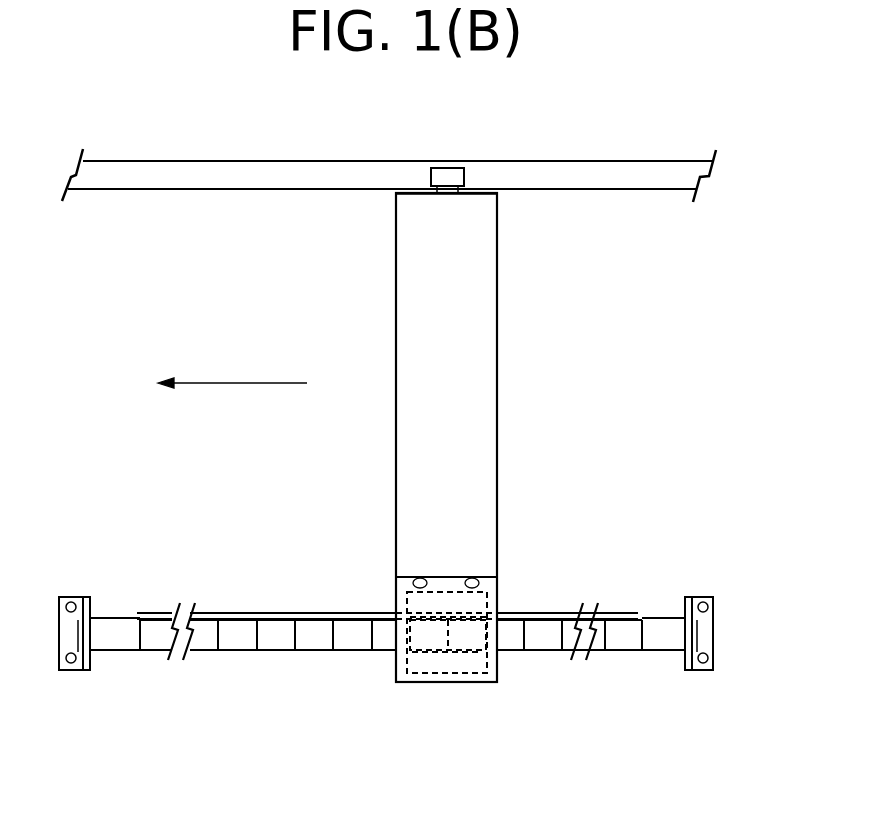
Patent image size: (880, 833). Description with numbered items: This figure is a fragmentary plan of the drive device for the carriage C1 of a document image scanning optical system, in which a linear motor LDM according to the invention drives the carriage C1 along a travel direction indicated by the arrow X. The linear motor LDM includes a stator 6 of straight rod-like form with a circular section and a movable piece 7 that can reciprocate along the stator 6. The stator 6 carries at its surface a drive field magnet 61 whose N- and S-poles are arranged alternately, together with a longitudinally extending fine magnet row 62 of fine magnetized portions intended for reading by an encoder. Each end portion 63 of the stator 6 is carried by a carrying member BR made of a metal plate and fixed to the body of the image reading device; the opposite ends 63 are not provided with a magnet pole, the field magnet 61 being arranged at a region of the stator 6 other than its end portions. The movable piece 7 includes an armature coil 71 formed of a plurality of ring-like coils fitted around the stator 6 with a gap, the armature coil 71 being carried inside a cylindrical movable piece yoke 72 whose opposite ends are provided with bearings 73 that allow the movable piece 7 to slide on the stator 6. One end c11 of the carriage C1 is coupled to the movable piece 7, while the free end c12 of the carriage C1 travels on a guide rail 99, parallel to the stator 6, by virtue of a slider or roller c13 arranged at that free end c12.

The guide rail 99 is at (270, 160).
The slider or roller c13 is at (452, 176).
The free end of the carriage c12 is at (430, 208).
The carriage C1 is at (462, 450).
The one end of the carriage c11 is at (455, 577).
The linear motor LDM is at (566, 577).
The moving direction X is at (228, 382).
The stator 6 is at (392, 590).
The drive field magnet 61 is at (212, 622).
The fine magnet row 62 is at (296, 612).
The end portion of the stator 63 is at (109, 623).
The movable piece 7 is at (449, 641).
The armature coil 71 is at (443, 665).
The movable piece yoke 72 is at (401, 683).
The bearings 73 is at (393, 658).
The carrying member BR is at (72, 670).